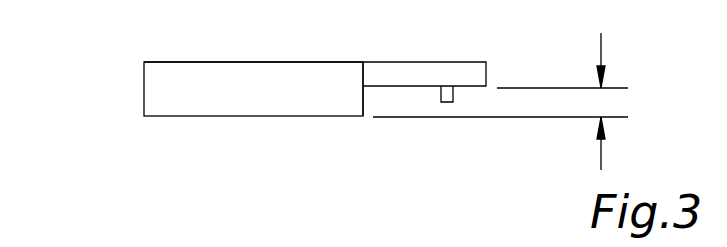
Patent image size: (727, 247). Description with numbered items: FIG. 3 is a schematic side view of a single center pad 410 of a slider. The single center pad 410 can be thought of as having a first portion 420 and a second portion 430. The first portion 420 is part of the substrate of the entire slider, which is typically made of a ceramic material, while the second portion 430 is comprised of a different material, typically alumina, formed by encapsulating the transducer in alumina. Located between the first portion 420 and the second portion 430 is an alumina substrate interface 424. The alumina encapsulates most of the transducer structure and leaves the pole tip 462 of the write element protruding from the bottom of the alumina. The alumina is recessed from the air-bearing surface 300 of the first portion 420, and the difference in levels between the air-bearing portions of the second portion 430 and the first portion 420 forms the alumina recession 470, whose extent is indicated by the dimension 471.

The air-bearing surface 300 is at (167, 117).
The single center pad 410 is at (144, 81).
The first portion 420 is at (230, 62).
The alumina substrate interface 424 is at (363, 62).
The second portion 430 is at (413, 62).
The pole tip 462 is at (454, 100).
The alumina recession 470 is at (372, 109).
The gap distance 471 is at (603, 48).